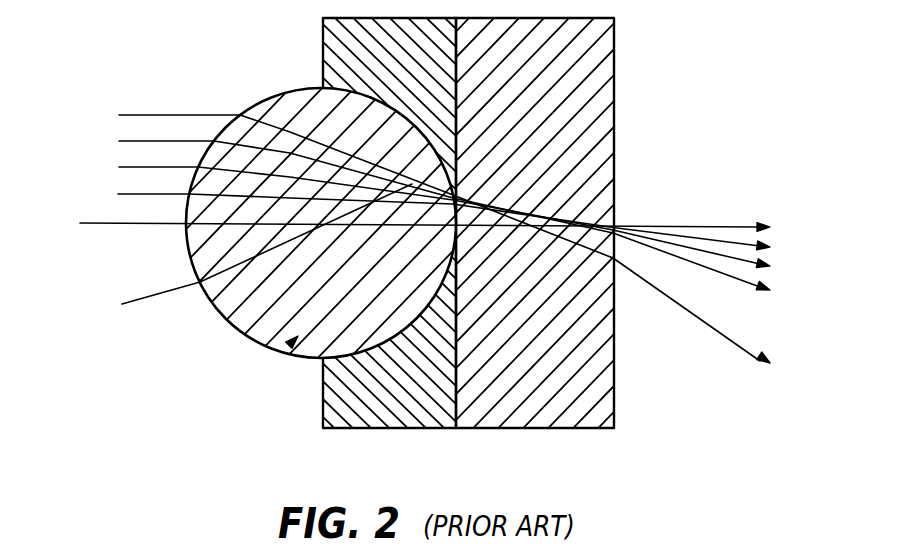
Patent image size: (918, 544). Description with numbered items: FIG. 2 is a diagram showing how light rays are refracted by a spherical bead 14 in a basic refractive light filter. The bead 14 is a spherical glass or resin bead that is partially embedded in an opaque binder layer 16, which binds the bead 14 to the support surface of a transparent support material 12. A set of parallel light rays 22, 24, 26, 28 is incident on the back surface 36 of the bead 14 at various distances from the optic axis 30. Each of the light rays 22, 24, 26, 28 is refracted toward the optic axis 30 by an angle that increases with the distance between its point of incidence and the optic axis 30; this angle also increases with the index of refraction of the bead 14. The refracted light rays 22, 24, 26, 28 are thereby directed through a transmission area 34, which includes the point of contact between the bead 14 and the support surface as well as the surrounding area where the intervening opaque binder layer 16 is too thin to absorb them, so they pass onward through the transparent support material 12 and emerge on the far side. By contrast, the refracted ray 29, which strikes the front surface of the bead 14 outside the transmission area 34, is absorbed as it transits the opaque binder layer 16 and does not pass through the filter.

The transparent support material 12 is at (524, 428).
The spherical bead 14 is at (285, 346).
The opaque binder layer 16 is at (397, 428).
The light ray 22 is at (118, 194).
The light ray 24 is at (119, 167).
The light ray 26 is at (119, 141).
The light ray 28 is at (119, 115).
The refracted ray 29 is at (122, 304).
The optic axis 30 is at (153, 224).
The transmission area 34 is at (470, 198).
The back surface 36 is at (220, 314).